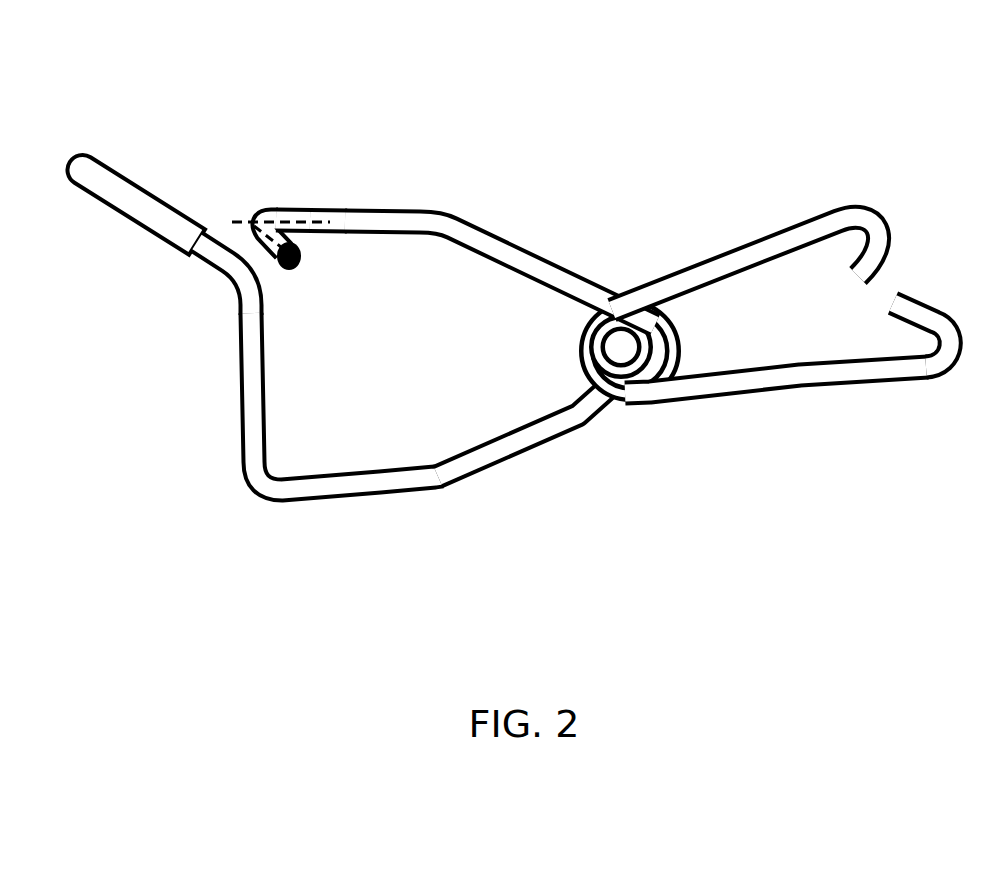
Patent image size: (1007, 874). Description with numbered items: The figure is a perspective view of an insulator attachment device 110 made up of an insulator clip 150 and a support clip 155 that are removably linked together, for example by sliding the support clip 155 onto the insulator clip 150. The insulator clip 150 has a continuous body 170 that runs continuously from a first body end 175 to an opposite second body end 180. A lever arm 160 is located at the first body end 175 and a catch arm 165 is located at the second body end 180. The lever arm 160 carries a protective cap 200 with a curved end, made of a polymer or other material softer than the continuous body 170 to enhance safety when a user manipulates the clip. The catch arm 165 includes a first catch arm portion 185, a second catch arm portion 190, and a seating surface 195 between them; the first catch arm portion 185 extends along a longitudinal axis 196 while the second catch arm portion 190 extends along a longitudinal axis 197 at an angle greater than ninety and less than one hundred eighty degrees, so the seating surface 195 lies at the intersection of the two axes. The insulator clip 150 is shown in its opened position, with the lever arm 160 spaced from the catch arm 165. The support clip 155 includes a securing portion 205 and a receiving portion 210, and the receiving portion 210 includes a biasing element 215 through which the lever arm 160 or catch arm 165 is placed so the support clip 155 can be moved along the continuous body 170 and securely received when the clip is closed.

The insulator attachment device 110 is at (495, 291).
The insulator clip 150 is at (364, 506).
The support clip 155 is at (711, 248).
The lever arm 160 is at (187, 268).
The catch arm 165 is at (314, 197).
The continuous body 170 is at (437, 454).
The first body end 175 is at (142, 235).
The second body end 180 is at (340, 210).
The first catch arm portion 185 is at (287, 208).
The second catch arm portion 190 is at (258, 250).
The seating surface 195 is at (280, 230).
The longitudinal axis 196 is at (239, 222).
The longitudinal axis 197 is at (314, 270).
The protective cap 200 is at (112, 193).
The securing portion 205 is at (880, 387).
The receiving portion 210 is at (670, 403).
The biasing element 215 is at (628, 384).